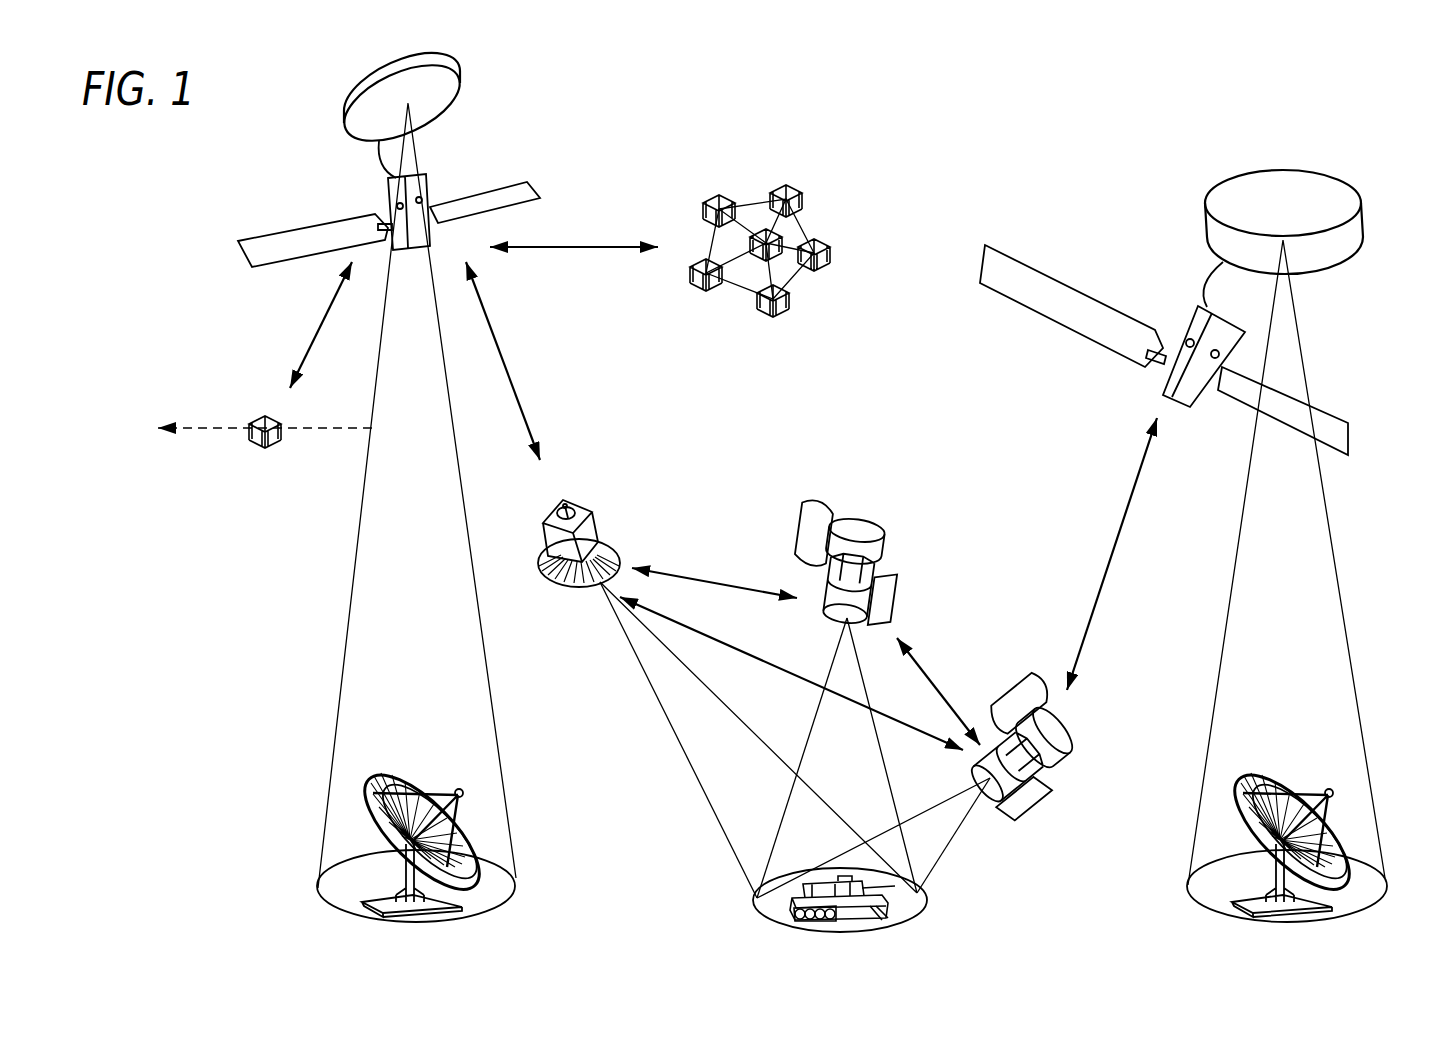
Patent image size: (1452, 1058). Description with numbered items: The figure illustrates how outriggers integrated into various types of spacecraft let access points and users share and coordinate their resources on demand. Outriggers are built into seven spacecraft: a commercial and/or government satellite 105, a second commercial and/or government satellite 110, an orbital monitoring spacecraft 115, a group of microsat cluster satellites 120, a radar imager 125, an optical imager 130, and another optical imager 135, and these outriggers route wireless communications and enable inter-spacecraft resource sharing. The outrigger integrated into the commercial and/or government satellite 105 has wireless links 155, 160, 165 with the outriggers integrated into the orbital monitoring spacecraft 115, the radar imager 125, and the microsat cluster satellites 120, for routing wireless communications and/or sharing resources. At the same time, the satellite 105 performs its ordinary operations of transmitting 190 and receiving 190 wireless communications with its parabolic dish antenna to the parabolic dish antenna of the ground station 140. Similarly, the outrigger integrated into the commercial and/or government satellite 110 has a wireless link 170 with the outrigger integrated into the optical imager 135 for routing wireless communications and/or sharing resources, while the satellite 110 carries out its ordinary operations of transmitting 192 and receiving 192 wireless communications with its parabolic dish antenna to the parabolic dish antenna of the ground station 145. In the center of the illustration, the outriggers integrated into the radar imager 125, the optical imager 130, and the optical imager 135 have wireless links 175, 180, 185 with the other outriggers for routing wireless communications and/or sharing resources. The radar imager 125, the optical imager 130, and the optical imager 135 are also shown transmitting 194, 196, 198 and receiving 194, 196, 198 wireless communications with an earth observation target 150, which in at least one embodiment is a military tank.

The commercial and/or government satellite 105 is at (464, 158).
The commercial and/or government satellite 110 is at (1153, 266).
The orbital monitoring spacecraft 115 is at (240, 400).
The microsat cluster satellites 120 is at (840, 205).
The radar imager 125 is at (620, 518).
The optical imager 130 is at (870, 500).
The optical imager 135 is at (1097, 746).
The ground station 140 is at (352, 876).
The ground station 145 is at (1230, 872).
The earth observation target 150 is at (908, 903).
The wireless link 155 is at (316, 333).
The wireless link 160 is at (506, 374).
The wireless link 165 is at (576, 246).
The wireless link 170 is at (1115, 546).
The wireless link 175 is at (717, 583).
The wireless link 180 is at (935, 688).
The wireless link 185 is at (724, 644).
The transmitting and receiving wireless communications 190 is at (343, 680).
The transmitting and receiving wireless communications 192 is at (1350, 646).
The transmitting and receiving wireless communications 194 is at (652, 690).
The transmitting and receiving wireless communications 196 is at (818, 708).
The transmitting and receiving wireless communications 198 is at (960, 830).